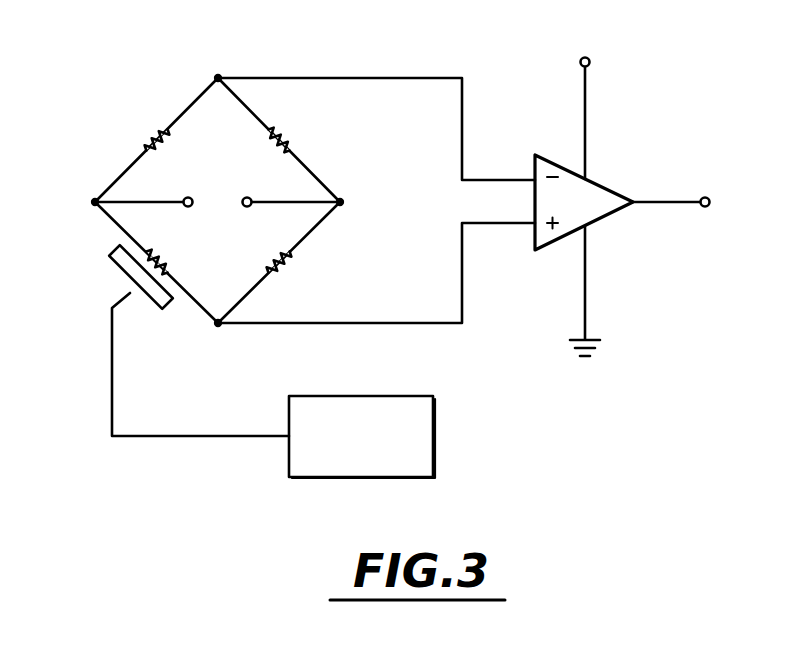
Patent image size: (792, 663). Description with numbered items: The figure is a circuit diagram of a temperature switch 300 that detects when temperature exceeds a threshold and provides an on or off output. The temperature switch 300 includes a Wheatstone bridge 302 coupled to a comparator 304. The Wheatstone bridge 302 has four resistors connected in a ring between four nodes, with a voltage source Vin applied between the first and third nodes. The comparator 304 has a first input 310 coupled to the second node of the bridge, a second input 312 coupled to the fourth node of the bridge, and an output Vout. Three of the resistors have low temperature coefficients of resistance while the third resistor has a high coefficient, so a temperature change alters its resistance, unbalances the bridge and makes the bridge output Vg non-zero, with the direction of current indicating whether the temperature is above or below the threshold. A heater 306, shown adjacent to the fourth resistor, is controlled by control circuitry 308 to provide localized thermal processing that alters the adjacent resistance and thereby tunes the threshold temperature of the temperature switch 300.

The temperature switch 300 is at (700, 74).
The Wheatstone bridge 302 is at (108, 80).
The comparator 304 is at (600, 192).
The heater 306 is at (123, 260).
The control circuitry 308 is at (433, 417).
The first input 310 is at (487, 180).
The second input 312 is at (487, 224).